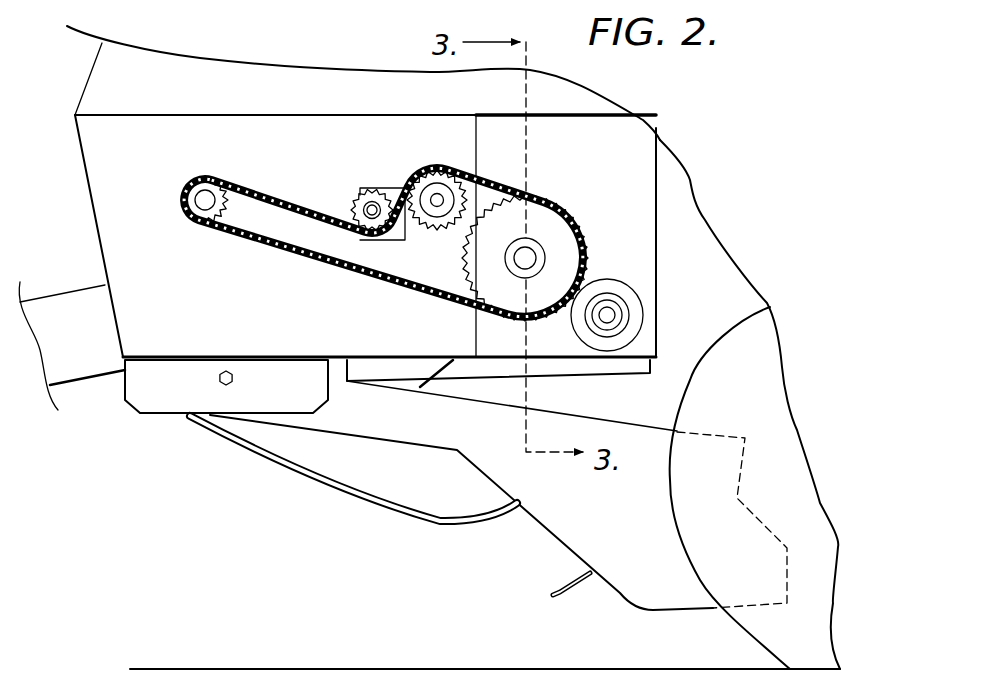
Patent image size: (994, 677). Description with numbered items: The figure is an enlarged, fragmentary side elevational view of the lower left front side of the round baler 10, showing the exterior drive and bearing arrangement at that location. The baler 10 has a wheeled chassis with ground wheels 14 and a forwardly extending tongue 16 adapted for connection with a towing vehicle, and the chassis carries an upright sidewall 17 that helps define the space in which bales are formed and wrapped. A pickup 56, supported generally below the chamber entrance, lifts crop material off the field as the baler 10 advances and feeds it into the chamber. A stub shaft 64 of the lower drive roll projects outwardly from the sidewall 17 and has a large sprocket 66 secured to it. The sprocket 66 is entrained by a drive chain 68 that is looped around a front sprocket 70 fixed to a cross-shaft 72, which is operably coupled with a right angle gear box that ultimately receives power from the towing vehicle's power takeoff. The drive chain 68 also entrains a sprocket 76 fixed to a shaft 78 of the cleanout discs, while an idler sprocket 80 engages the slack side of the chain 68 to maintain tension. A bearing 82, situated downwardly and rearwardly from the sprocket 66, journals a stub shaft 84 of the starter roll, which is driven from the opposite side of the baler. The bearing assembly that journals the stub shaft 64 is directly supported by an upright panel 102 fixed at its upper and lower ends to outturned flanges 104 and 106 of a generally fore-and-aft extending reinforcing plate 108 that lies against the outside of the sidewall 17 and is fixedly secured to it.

The round baler 10 is at (745, 200).
The ground wheels 14 is at (763, 343).
The tongue 16 is at (73, 368).
The sidewall 17 is at (140, 65).
The pickup 56 is at (553, 555).
The stub shaft 64 is at (532, 248).
The sprocket 66 is at (550, 235).
The drive chain 68 is at (367, 278).
The front sprocket 70 is at (243, 197).
The cross-shaft 72 is at (203, 200).
The sprocket 76 is at (432, 182).
The shaft 78 is at (439, 215).
The idler sprocket 80 is at (353, 200).
The bearing 82 is at (637, 327).
The stub shaft 84 is at (607, 315).
The upright panel 102 is at (627, 150).
The outturned flange 104 is at (235, 113).
The outturned flange 106 is at (303, 362).
The reinforcing plate 108 is at (122, 232).